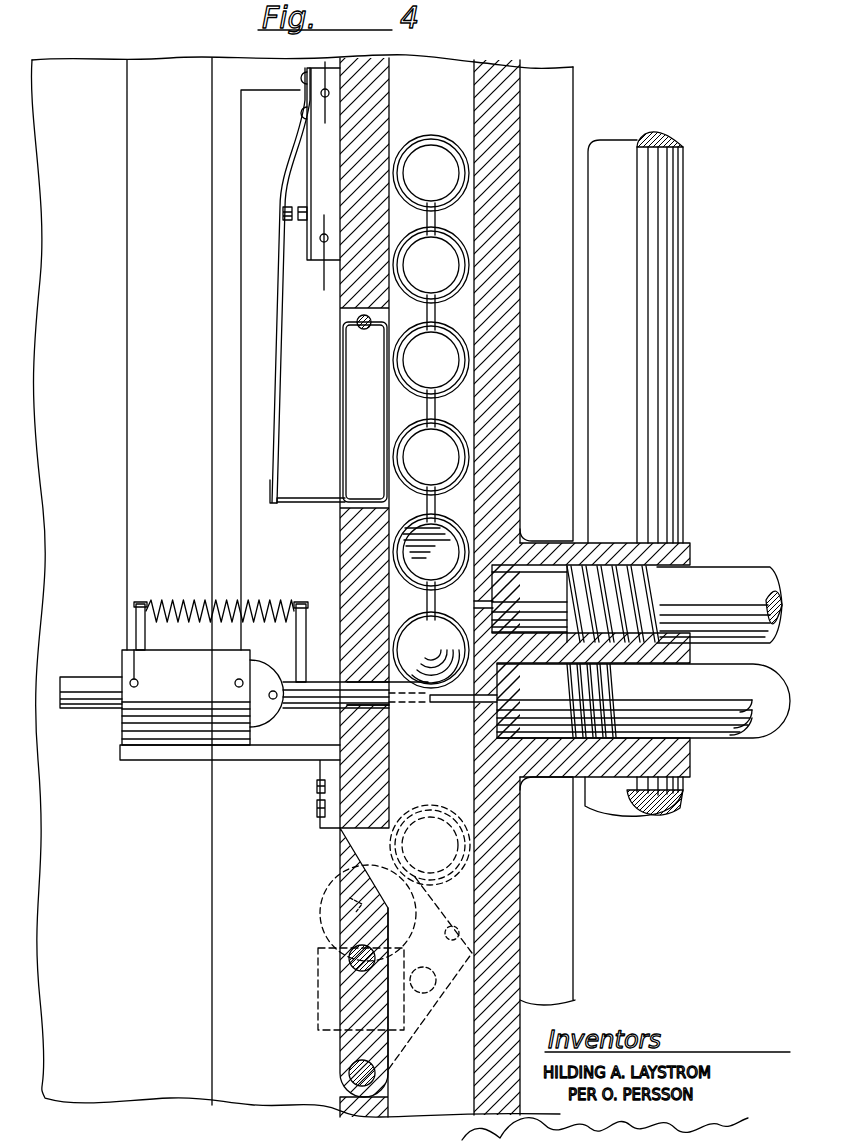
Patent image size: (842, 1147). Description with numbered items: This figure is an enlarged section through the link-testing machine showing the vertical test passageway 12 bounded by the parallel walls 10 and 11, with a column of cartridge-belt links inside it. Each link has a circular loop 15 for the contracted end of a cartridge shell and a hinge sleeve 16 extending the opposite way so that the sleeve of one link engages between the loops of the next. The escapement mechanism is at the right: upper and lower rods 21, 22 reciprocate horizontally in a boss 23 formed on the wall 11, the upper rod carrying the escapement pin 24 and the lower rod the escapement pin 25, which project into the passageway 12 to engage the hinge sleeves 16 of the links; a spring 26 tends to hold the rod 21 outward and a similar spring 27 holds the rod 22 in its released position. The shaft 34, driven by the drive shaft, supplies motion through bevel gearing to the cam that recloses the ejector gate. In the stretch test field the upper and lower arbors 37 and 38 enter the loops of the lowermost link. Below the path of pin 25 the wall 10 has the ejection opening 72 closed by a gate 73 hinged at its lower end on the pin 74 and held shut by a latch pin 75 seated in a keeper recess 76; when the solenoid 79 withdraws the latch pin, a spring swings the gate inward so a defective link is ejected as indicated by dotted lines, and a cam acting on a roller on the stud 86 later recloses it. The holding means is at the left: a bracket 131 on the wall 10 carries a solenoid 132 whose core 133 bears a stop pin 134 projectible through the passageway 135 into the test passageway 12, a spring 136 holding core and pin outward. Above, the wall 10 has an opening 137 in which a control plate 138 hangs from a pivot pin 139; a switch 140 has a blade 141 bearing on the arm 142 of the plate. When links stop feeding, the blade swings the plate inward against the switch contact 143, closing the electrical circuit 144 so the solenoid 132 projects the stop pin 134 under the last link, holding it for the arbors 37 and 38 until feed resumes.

The wall 10 is at (348, 547).
The wall 11 is at (505, 495).
The test passageway 12 is at (460, 1000).
The circular loop 15 is at (437, 432).
The hinge sleeve 16 is at (436, 495).
The upper rod 21 is at (727, 578).
The lower rod 22 is at (727, 722).
The boss 23 is at (680, 547).
The escapement pin 24 is at (503, 606).
The escapement pin 25 is at (447, 705).
The spring 26 is at (655, 593).
The spring 27 is at (600, 700).
The shaft 34 is at (635, 306).
The upper arbor 37 is at (400, 558).
The lower arbor 38 is at (428, 649).
The ejection opening 72 is at (365, 845).
The gate 73 is at (353, 987).
The pin 74 is at (350, 1073).
The latch pin 75 is at (352, 905).
The keeper recess 76 is at (465, 915).
The solenoid 79 is at (320, 890).
The stud 86 is at (351, 956).
The bracket 131 is at (278, 753).
The solenoid 132 is at (183, 695).
The core 133 is at (302, 704).
The stop pin 134 is at (363, 693).
The passageway 135 is at (370, 706).
The spring 136 is at (197, 580).
The opening 137 is at (352, 397).
The control plate 138 is at (386, 413).
The pivot pin 139 is at (363, 330).
The switch 140 is at (328, 163).
The blade 141 is at (281, 322).
The arm 142 is at (327, 477).
The switch contact 143 is at (325, 234).
The electrical circuit 144 is at (240, 370).